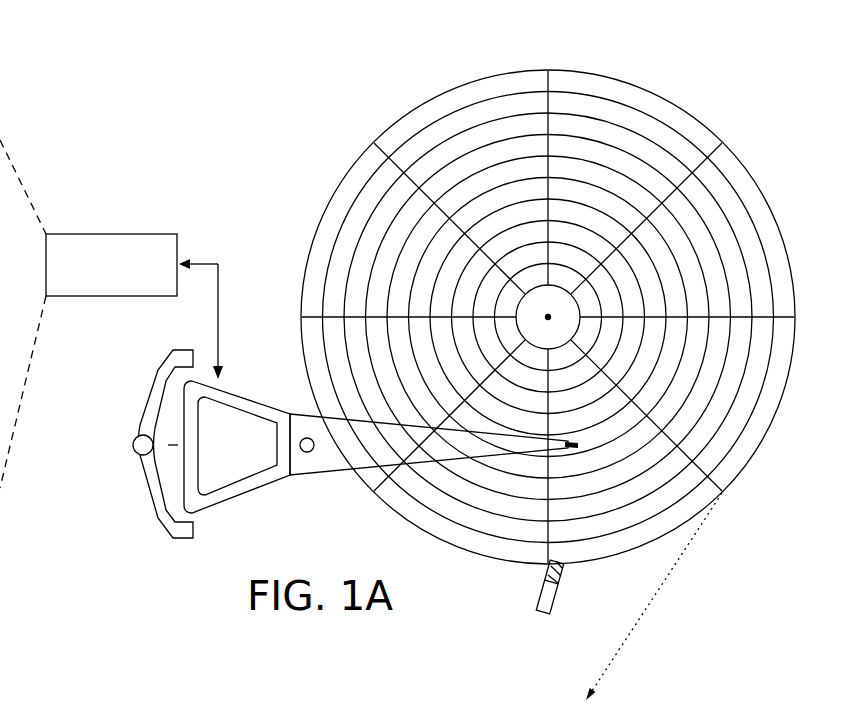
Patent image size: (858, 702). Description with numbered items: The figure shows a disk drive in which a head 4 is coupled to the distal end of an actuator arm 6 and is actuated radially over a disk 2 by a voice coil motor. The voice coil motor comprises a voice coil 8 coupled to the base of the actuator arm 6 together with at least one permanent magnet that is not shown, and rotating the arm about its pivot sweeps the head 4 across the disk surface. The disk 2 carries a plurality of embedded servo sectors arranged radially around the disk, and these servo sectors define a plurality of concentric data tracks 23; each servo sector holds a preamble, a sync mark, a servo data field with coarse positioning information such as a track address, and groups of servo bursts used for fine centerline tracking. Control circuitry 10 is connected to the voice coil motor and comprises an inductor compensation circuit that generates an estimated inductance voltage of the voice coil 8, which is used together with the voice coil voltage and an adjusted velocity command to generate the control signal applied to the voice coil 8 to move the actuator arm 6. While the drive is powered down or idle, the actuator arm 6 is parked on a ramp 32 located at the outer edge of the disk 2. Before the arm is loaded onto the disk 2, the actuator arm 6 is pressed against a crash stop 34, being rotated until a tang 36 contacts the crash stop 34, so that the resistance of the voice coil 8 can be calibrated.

The disk 2 is at (333, 126).
The head 4 is at (575, 441).
The actuator arm 6 is at (302, 477).
The voice coil 8 is at (229, 510).
The control circuitry 10 is at (110, 233).
The data tracks 23 is at (722, 230).
The ramp 32 is at (559, 594).
The crash stop 34 is at (120, 446).
The tang 36 is at (168, 445).